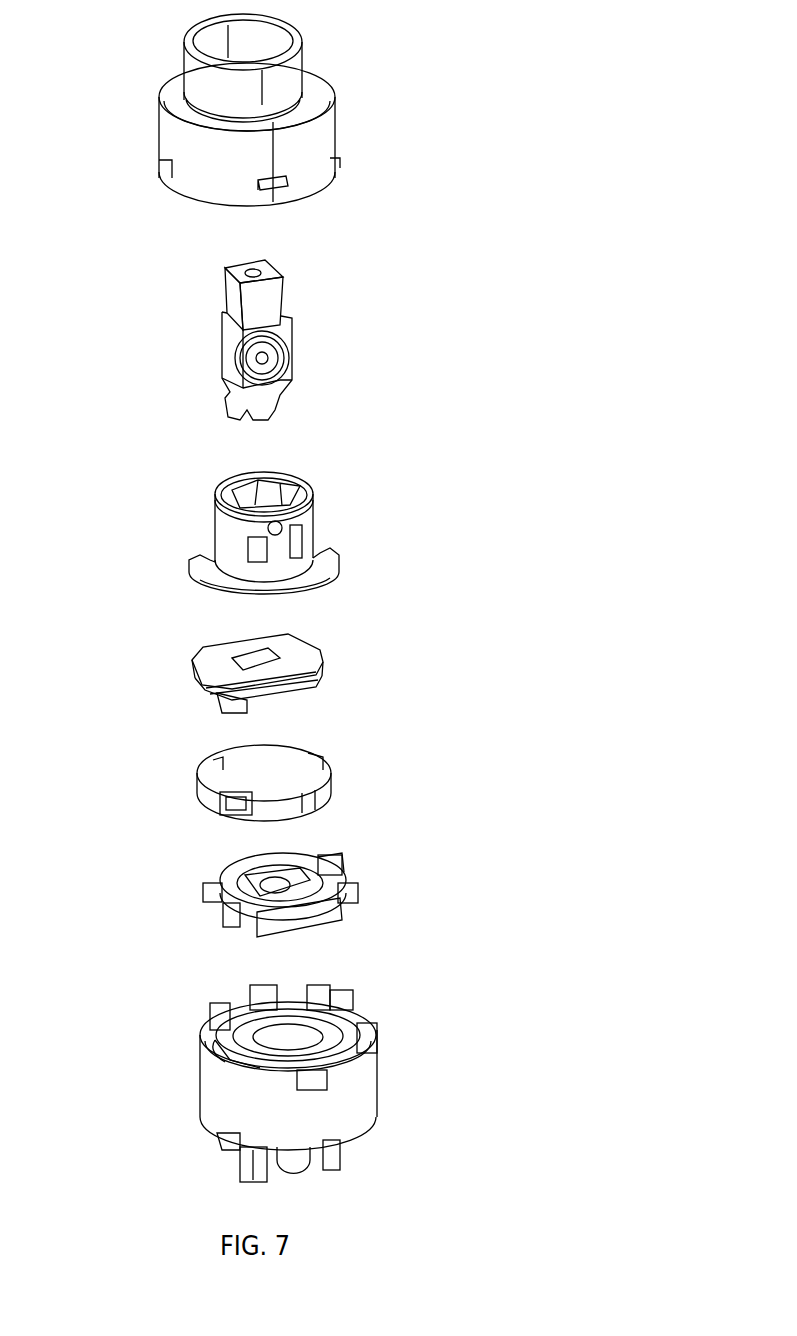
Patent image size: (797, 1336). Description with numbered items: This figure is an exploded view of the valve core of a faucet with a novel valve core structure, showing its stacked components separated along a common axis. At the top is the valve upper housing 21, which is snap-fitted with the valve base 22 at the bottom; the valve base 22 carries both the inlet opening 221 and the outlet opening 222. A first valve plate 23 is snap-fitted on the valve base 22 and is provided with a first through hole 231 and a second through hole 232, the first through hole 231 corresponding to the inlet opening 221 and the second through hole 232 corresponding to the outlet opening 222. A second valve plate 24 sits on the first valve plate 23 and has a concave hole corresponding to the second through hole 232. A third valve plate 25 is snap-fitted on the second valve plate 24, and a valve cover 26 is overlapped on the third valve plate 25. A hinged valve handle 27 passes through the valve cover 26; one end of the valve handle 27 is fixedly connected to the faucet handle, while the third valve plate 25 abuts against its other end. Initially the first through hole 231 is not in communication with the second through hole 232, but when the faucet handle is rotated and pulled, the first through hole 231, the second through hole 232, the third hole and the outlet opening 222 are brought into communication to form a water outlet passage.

The valve upper housing 21 is at (320, 148).
The valve handle 27 is at (233, 310).
The valve cover 26 is at (303, 530).
The third valve plate 25 is at (197, 665).
The second valve plate 24 is at (287, 768).
The first valve plate 23 is at (279, 876).
The first through hole 231 is at (320, 868).
The second through hole 232 is at (223, 905).
The valve base 22 is at (281, 1086).
The inlet opening 221 is at (323, 1013).
The outlet opening 222 is at (223, 1053).